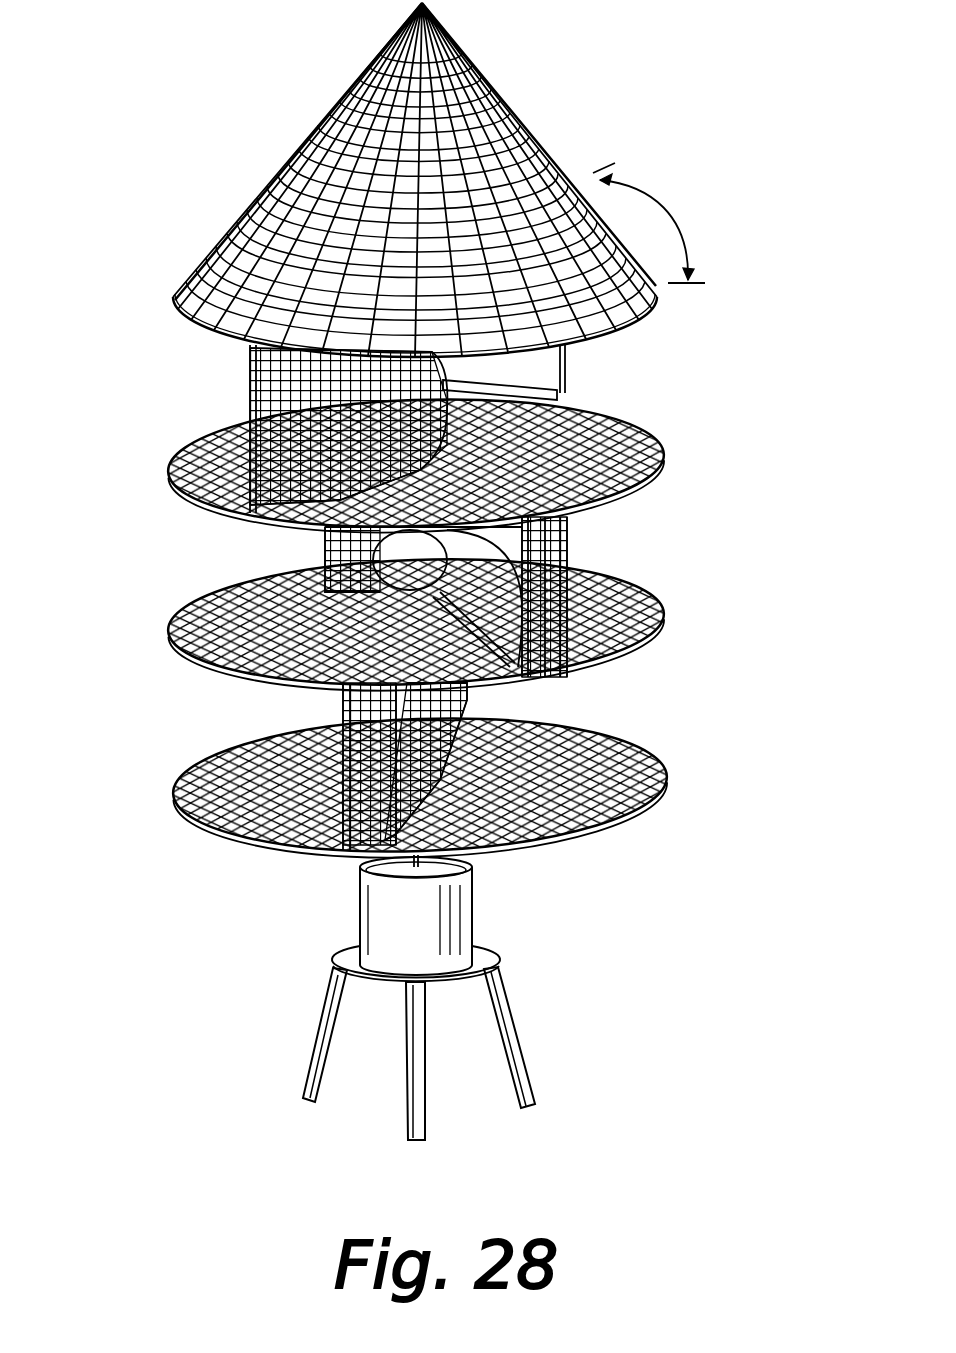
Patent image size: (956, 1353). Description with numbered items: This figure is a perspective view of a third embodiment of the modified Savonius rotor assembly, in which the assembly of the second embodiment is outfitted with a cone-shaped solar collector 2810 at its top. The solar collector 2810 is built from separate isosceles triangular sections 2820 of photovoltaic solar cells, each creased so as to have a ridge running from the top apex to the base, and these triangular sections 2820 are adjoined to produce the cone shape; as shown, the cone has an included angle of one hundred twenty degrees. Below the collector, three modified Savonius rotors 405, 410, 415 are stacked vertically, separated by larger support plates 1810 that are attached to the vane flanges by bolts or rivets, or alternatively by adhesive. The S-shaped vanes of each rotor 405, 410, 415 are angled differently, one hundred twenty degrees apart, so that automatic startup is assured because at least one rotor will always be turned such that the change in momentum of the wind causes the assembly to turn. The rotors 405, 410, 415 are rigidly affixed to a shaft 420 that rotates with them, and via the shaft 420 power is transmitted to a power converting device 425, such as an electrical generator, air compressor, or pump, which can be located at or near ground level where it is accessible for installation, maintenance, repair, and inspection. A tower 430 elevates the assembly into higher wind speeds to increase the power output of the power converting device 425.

The cone-shaped solar collector 2810 is at (532, 95).
The isosceles triangular sections 2820 is at (233, 338).
The support plate 1810 is at (664, 770).
The modified Savonius rotor 415 is at (238, 493).
The modified Savonius rotor 410 is at (563, 640).
The modified Savonius rotor 405 is at (360, 848).
The shaft 420 is at (414, 860).
The power converting device 425 is at (472, 908).
The tower 430 is at (513, 1022).